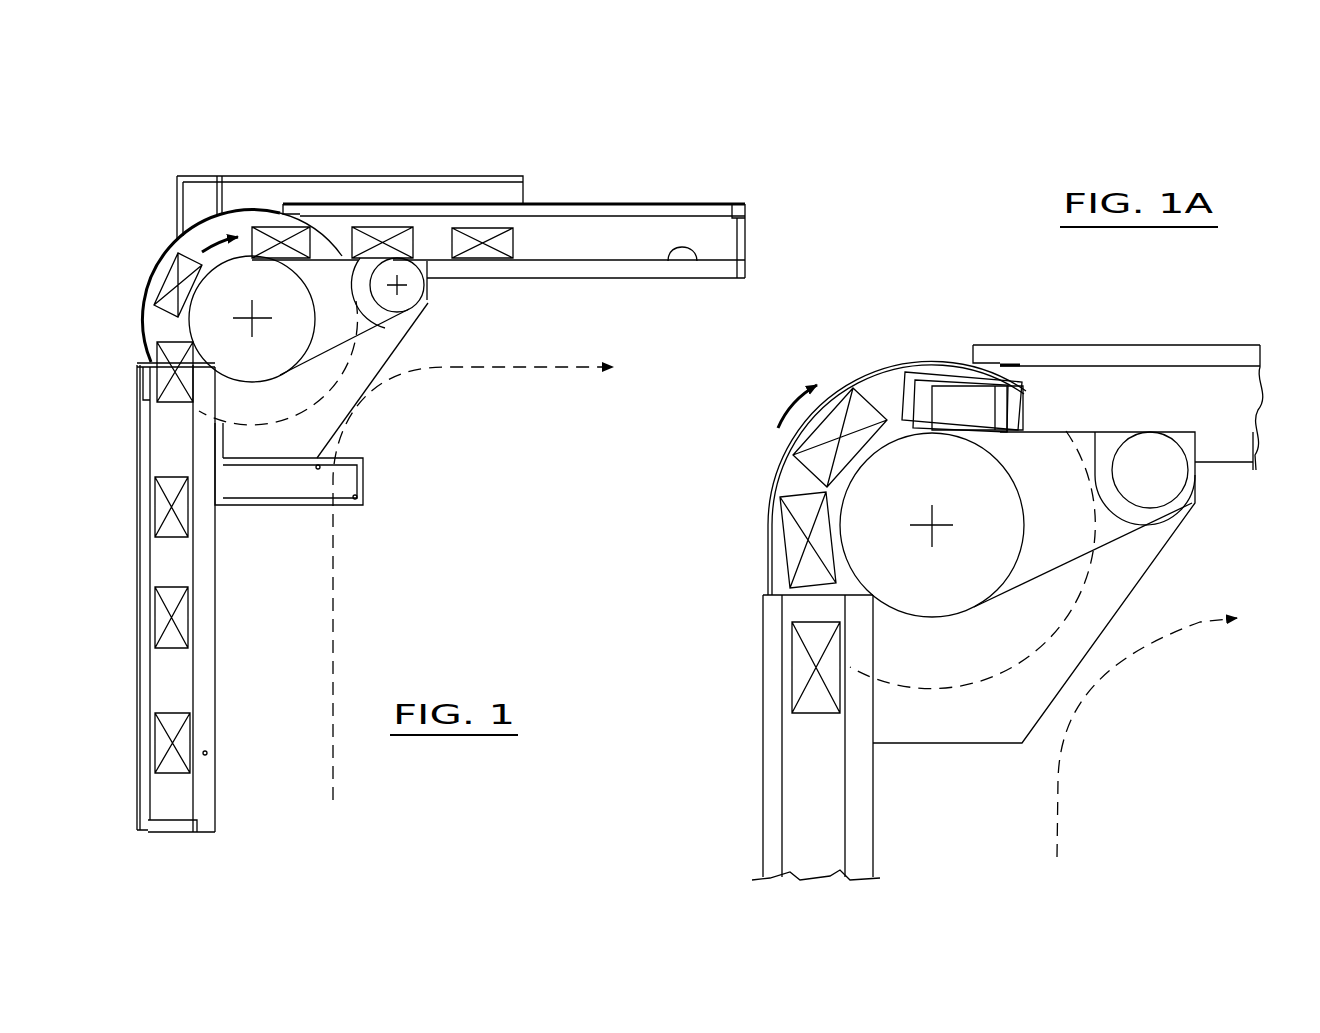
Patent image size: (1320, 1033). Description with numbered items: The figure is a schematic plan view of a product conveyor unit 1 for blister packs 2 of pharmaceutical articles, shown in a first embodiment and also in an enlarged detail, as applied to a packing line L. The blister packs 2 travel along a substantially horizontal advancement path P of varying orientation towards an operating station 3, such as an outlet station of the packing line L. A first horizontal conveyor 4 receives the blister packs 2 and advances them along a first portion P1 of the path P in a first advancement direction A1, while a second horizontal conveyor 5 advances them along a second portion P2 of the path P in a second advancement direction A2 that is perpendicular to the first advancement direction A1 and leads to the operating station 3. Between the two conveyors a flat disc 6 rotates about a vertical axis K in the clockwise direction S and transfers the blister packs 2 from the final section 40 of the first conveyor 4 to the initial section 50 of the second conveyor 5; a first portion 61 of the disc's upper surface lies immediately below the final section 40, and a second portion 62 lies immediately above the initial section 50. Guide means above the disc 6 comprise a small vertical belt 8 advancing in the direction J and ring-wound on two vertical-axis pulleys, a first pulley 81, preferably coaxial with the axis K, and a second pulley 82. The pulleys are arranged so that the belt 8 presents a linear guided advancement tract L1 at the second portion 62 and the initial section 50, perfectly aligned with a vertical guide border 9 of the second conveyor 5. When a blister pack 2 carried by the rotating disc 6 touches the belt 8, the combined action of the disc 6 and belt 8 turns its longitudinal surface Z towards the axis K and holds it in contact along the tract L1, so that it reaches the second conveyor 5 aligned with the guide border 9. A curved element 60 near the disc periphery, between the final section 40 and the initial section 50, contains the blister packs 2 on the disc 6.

In FIG. 1, the product conveyor unit 1 is at (345, 158).
In FIG. 1, the blister packs 2 is at (473, 232).
In FIG. 1A, the blister packs 2 is at (807, 675).
In FIG. 1, the operating station 3 is at (786, 262).
In FIG. 1, the first horizontal conveyor 4 is at (133, 552).
In FIG. 1A, the first horizontal conveyor 4 is at (773, 750).
In FIG. 1, the second horizontal conveyor 5 is at (558, 203).
In FIG. 1A, the second horizontal conveyor 5 is at (1238, 355).
In FIG. 1, the flat disc 6 is at (202, 227).
In FIG. 1A, the flat disc 6 is at (788, 483).
In FIG. 1, the belt 8 is at (364, 316).
In FIG. 1A, the belt 8 is at (1012, 434).
In FIG. 1, the vertical guide border 9 is at (686, 254).
In FIG. 1A, the vertical guide border 9 is at (1233, 433).
In FIG. 1A, the final section of the first conveyor 40 is at (773, 620).
In FIG. 1A, the initial section of the second conveyor 50 is at (1035, 353).
In FIG. 1, the curved element 60 is at (158, 262).
In FIG. 1A, the curved element 60 is at (903, 360).
In FIG. 1A, the first portion of the upper surface of the disc 61 is at (884, 628).
In FIG. 1A, the second portion of the upper surface of the disc 62 is at (1040, 418).
In FIG. 1, the first pulley 81 is at (280, 375).
In FIG. 1A, the first pulley 81 is at (945, 492).
In FIG. 1, the second pulley 82 is at (424, 288).
In FIG. 1A, the second pulley 82 is at (1173, 480).
In FIG. 1, the clockwise direction S is at (207, 240).
In FIG. 1A, the clockwise direction S is at (790, 406).
In FIG. 1, the longitudinal surface Z is at (254, 258).
In FIG. 1A, the longitudinal surface Z is at (945, 422).
In FIG. 1, the advancement direction of the belt J is at (345, 259).
In FIG. 1A, the advancement direction of the belt J is at (1030, 443).
In FIG. 1, the vertical axis K is at (259, 323).
In FIG. 1A, the vertical axis K is at (940, 532).
In FIG. 1, the linear guided advancement tract L1 is at (385, 328).
In FIG. 1A, the linear guided advancement tract L1 is at (1133, 523).
In FIG. 1, the packing line L is at (651, 313).
In FIG. 1, the advancement path P is at (548, 404).
In FIG. 1A, the advancement path P is at (1225, 668).
In FIG. 1, the first portion of the path P1 is at (238, 762).
In FIG. 1A, the first portion of the path P1 is at (898, 808).
In FIG. 1, the second portion of the path P2 is at (703, 183).
In FIG. 1A, the second portion of the path P2 is at (1202, 328).
In FIG. 1, the first advancement direction A1 is at (118, 817).
In FIG. 1A, the first advancement direction A1 is at (817, 791).
In FIG. 1, the second advancement direction A2 is at (565, 240).
In FIG. 1A, the second advancement direction A2 is at (1123, 400).